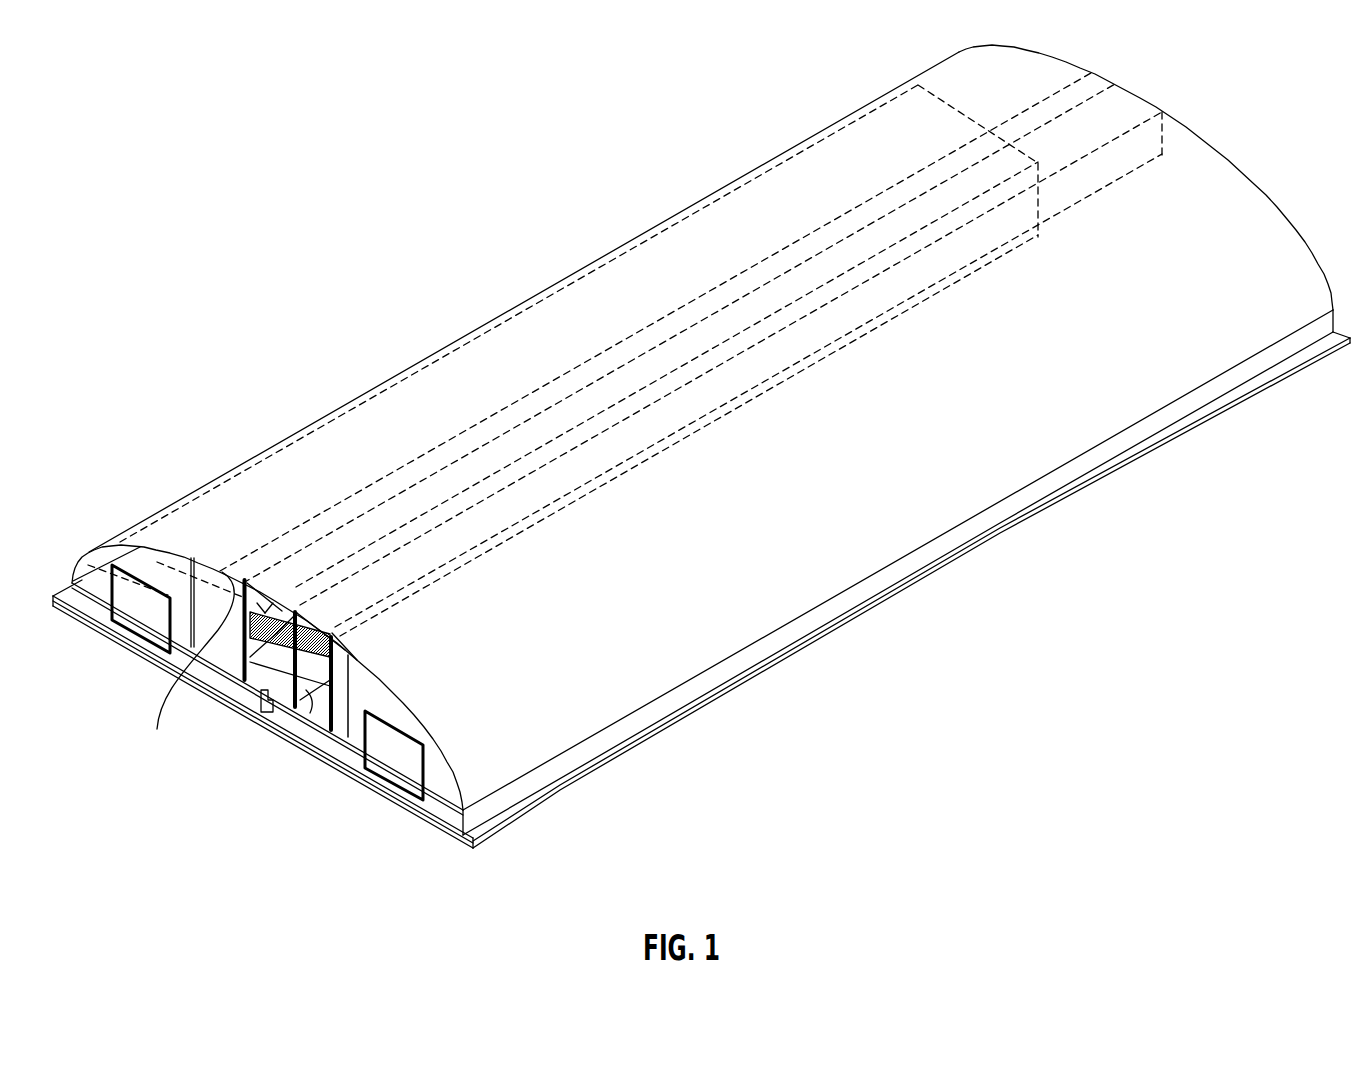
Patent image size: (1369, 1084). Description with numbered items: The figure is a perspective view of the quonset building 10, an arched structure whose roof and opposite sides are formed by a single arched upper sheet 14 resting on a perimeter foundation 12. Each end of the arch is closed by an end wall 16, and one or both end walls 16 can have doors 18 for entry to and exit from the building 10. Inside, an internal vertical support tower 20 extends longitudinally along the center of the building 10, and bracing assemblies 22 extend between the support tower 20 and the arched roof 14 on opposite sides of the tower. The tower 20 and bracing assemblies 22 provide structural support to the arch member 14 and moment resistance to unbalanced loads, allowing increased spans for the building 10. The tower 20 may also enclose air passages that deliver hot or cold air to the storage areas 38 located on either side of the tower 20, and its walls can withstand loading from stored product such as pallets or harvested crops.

The quonset building 10 is at (690, 133).
The perimeter foundation 12 is at (557, 776).
The arched upper sheet 14 is at (980, 497).
The end walls 16 is at (1212, 146).
The doors 18 is at (125, 625).
The internal vertical support tower 20 is at (313, 695).
The bracing assemblies 22 is at (187, 668).
The storage areas 38 is at (447, 384).